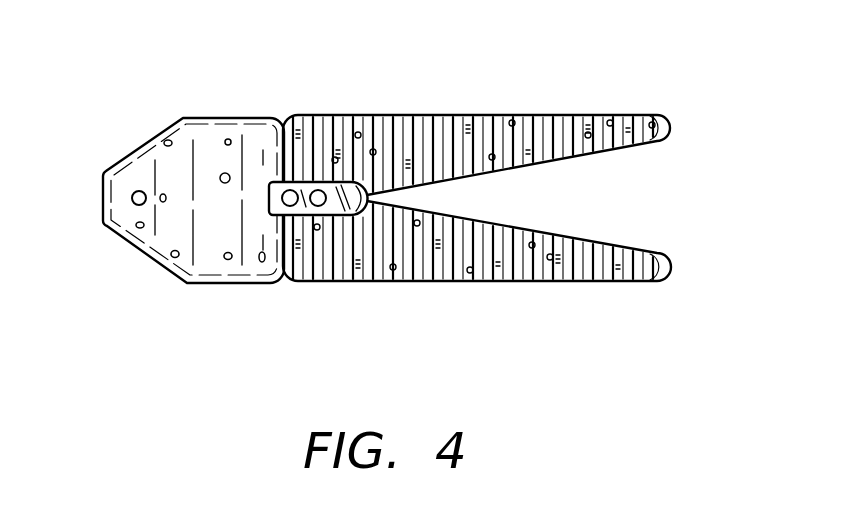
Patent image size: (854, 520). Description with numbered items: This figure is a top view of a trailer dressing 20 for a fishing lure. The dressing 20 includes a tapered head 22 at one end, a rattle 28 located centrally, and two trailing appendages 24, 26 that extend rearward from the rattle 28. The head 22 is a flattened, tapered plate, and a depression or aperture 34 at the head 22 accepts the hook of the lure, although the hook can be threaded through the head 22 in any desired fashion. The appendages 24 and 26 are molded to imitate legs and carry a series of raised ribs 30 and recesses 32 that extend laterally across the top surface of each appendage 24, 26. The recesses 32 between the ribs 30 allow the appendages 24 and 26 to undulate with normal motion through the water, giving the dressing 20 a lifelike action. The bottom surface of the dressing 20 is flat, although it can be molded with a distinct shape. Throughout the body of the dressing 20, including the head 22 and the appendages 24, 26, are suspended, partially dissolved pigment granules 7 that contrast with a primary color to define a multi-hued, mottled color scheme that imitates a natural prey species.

The dressing 20 is at (412, 178).
The tapered head 22 is at (177, 211).
The trailing appendage 24 is at (673, 264).
The trailing appendage 26 is at (672, 126).
The rattle 28 is at (333, 190).
The raised ribs 30 is at (418, 130).
The recesses 32 is at (500, 252).
The depression or aperture 34 is at (134, 192).
The pigment granules 7 is at (228, 260).